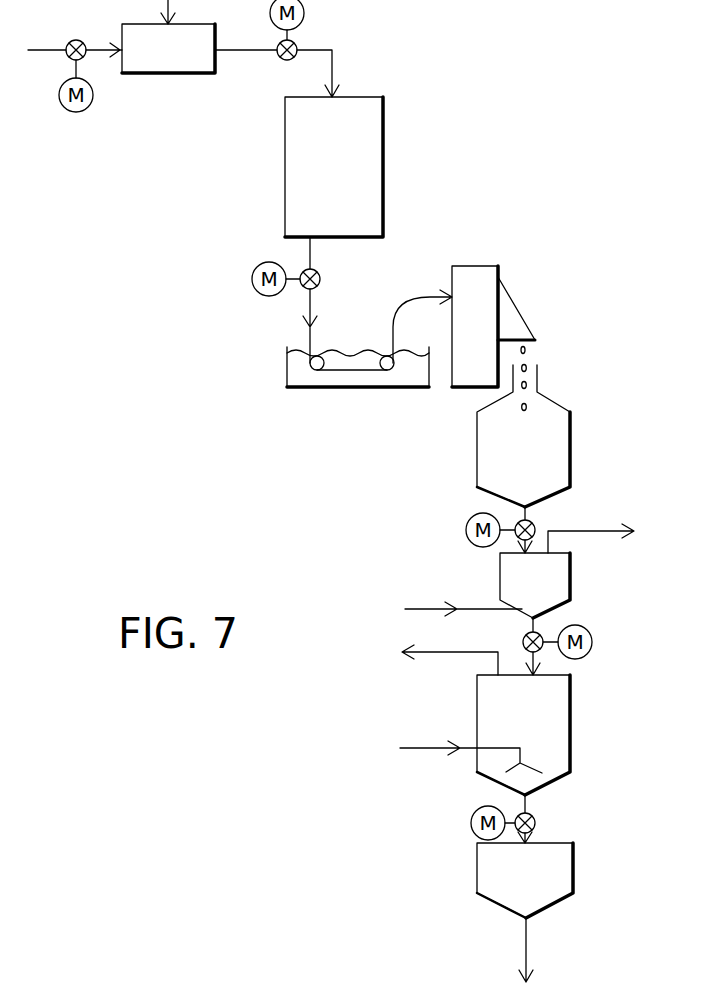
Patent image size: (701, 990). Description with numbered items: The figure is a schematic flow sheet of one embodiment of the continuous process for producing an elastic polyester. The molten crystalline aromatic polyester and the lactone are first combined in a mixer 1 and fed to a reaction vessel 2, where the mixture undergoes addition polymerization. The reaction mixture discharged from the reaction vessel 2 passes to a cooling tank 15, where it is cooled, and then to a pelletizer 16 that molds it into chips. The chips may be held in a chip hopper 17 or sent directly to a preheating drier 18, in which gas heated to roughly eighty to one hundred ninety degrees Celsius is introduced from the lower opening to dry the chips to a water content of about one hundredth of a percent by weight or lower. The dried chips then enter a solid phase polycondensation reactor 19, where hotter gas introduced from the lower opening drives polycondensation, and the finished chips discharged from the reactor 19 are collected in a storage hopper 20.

The mixer 1 is at (192, 66).
The reaction vessel 2 is at (292, 176).
The cooling tank 15 is at (293, 365).
The pelletizer 16 is at (487, 277).
The chip hopper 17 is at (488, 447).
The preheating drier 18 is at (508, 572).
The solid phase polycondensation reactor 19 is at (487, 708).
The storage hopper 20 is at (483, 868).